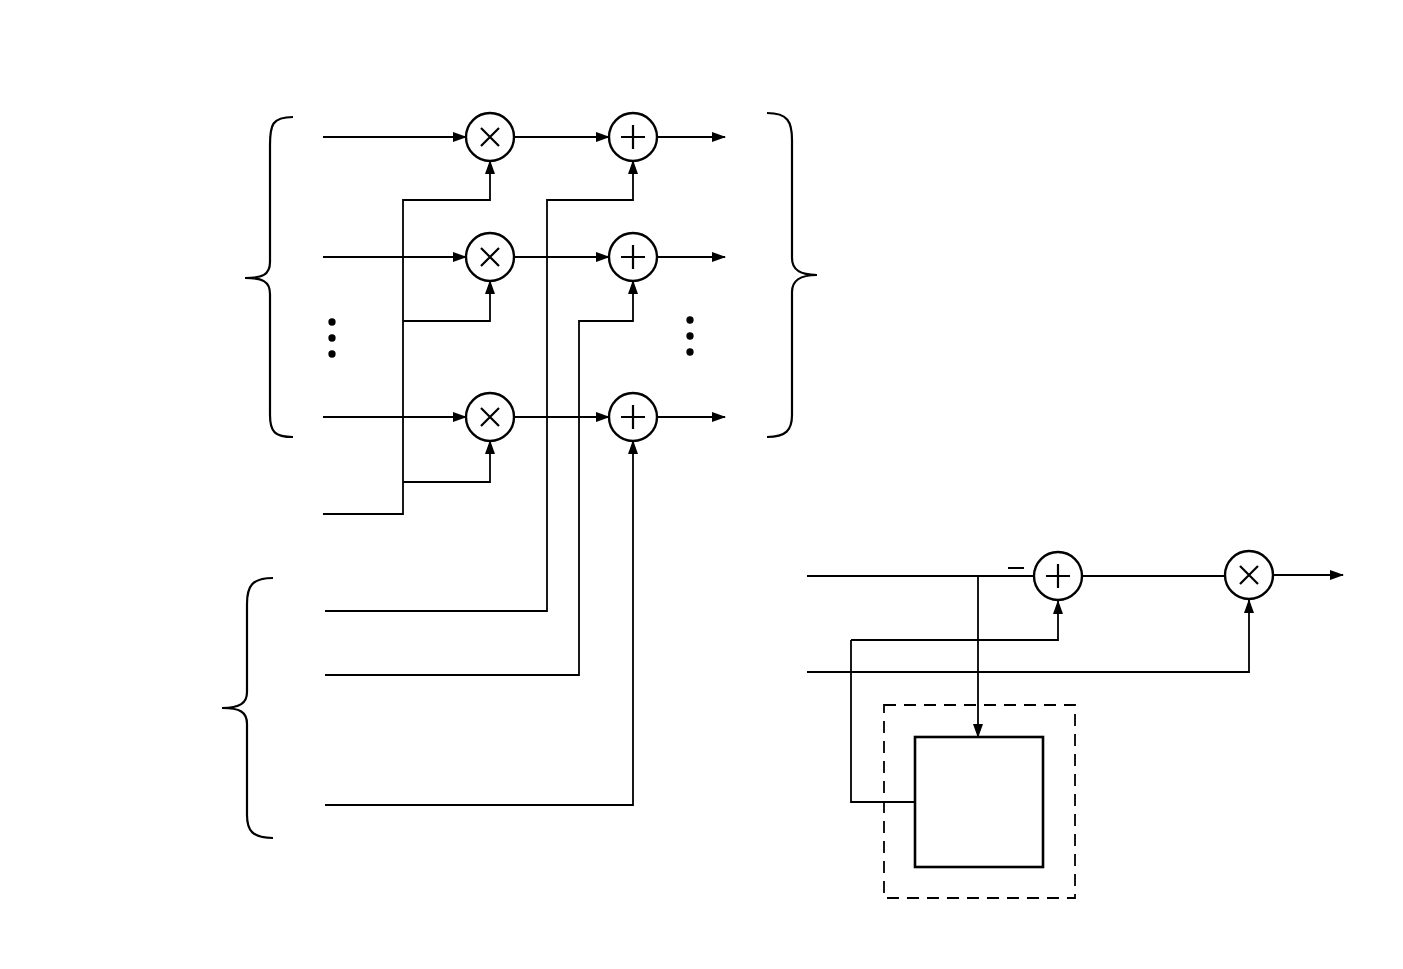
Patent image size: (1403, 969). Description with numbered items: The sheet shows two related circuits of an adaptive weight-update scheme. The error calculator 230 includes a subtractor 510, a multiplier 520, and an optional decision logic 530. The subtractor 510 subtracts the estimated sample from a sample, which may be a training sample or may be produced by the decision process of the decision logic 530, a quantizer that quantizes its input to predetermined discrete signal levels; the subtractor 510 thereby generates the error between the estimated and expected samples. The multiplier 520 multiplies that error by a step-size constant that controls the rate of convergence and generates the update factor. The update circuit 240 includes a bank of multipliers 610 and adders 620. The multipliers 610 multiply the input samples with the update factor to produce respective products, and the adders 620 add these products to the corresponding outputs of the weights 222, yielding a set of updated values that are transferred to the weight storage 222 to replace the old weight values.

In FIG. 6, the update circuit 240 is at (924, 166).
In FIG. 6, the error calculator 230 is at (325, 363).
In FIG. 5, the error calculator 230 is at (1278, 470).
In FIG. 6, the weight storage 222 is at (538, 475).
In FIG. 6, the multipliers 610 is at (490, 113).
In FIG. 6, the adders 620 is at (633, 113).
In FIG. 5, the subtractor 510 is at (1058, 551).
In FIG. 5, the multiplier 520 is at (1249, 551).
In FIG. 5, the decision logic 530 is at (1012, 737).